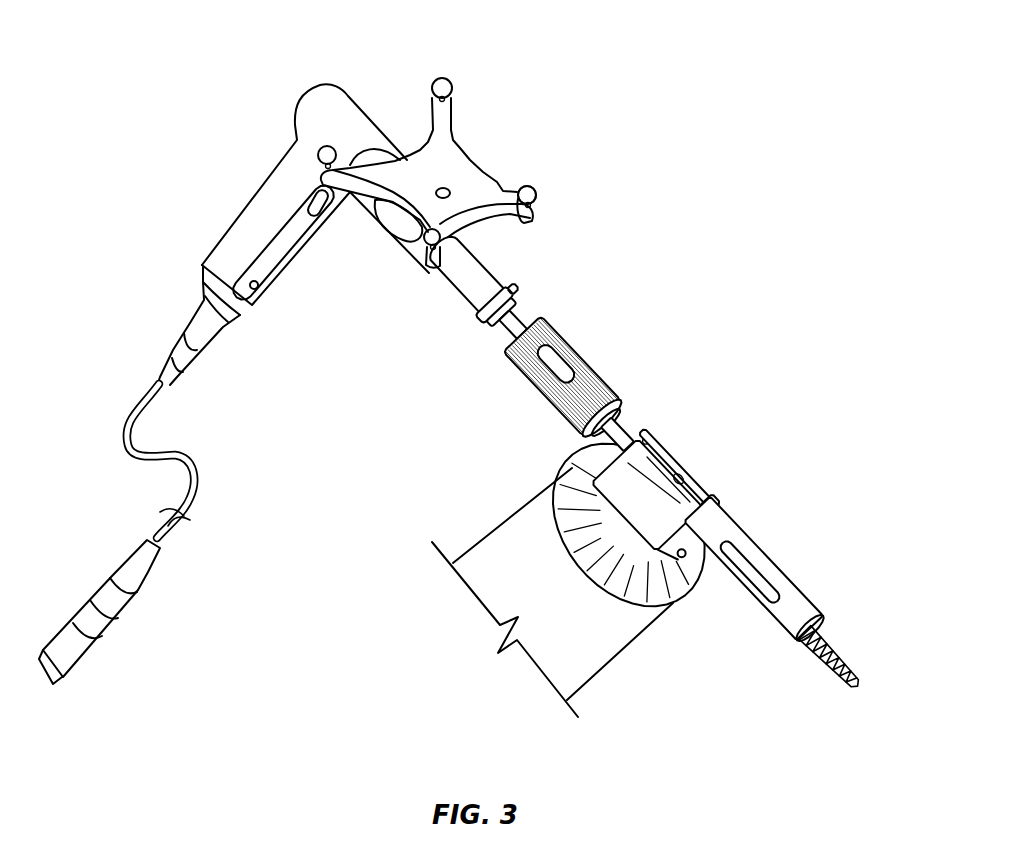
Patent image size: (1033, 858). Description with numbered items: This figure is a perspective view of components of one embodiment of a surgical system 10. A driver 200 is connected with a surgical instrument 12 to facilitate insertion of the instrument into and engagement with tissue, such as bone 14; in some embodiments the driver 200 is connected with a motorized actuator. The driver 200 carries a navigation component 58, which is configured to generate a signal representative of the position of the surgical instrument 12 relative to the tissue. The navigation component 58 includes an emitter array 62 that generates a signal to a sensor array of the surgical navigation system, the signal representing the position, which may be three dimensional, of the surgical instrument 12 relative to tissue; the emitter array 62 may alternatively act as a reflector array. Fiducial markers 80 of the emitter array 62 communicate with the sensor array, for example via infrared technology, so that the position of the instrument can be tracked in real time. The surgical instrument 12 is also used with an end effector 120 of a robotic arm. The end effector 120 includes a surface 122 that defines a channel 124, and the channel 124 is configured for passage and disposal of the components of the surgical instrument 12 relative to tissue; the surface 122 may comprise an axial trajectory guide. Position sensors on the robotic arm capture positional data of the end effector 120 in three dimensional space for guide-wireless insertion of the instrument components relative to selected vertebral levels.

The surgical system 10 is at (202, 55).
The surgical instrument 12 is at (862, 636).
The bone 14 is at (592, 635).
The navigation component 58 is at (547, 90).
The emitter array 62 is at (412, 90).
The fiducial markers 80 is at (533, 186).
The end effector 120 is at (645, 460).
The surface 122 is at (720, 515).
The channel 124 is at (724, 518).
The driver 200 is at (752, 583).